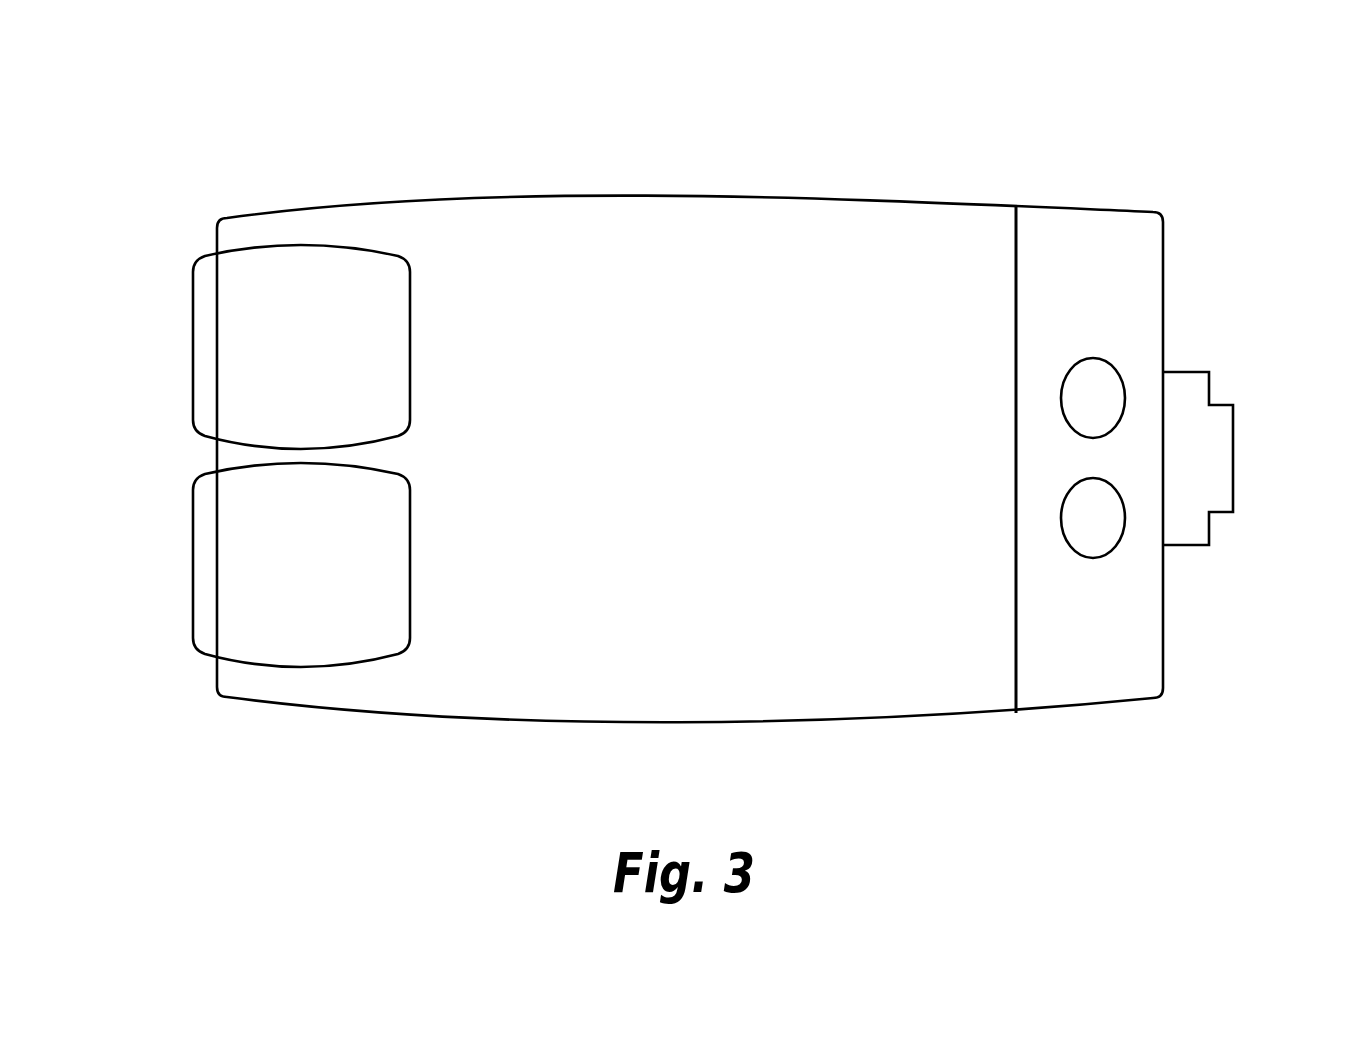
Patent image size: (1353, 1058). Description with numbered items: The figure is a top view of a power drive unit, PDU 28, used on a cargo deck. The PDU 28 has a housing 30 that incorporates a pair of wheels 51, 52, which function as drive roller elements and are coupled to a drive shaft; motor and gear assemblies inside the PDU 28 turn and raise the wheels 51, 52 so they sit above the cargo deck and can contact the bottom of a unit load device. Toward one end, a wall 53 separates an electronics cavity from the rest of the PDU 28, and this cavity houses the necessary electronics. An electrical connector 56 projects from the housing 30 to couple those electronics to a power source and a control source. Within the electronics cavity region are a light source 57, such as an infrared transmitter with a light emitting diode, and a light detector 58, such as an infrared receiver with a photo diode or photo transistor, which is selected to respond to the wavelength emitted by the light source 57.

The PDU 28 is at (353, 98).
The housing 30 is at (680, 197).
The wheel 51 is at (194, 292).
The wheel 52 is at (194, 552).
The wall 53 is at (1018, 265).
The electrical connector 56 is at (1234, 470).
The light source 57 is at (1105, 378).
The light detector 58 is at (1110, 540).